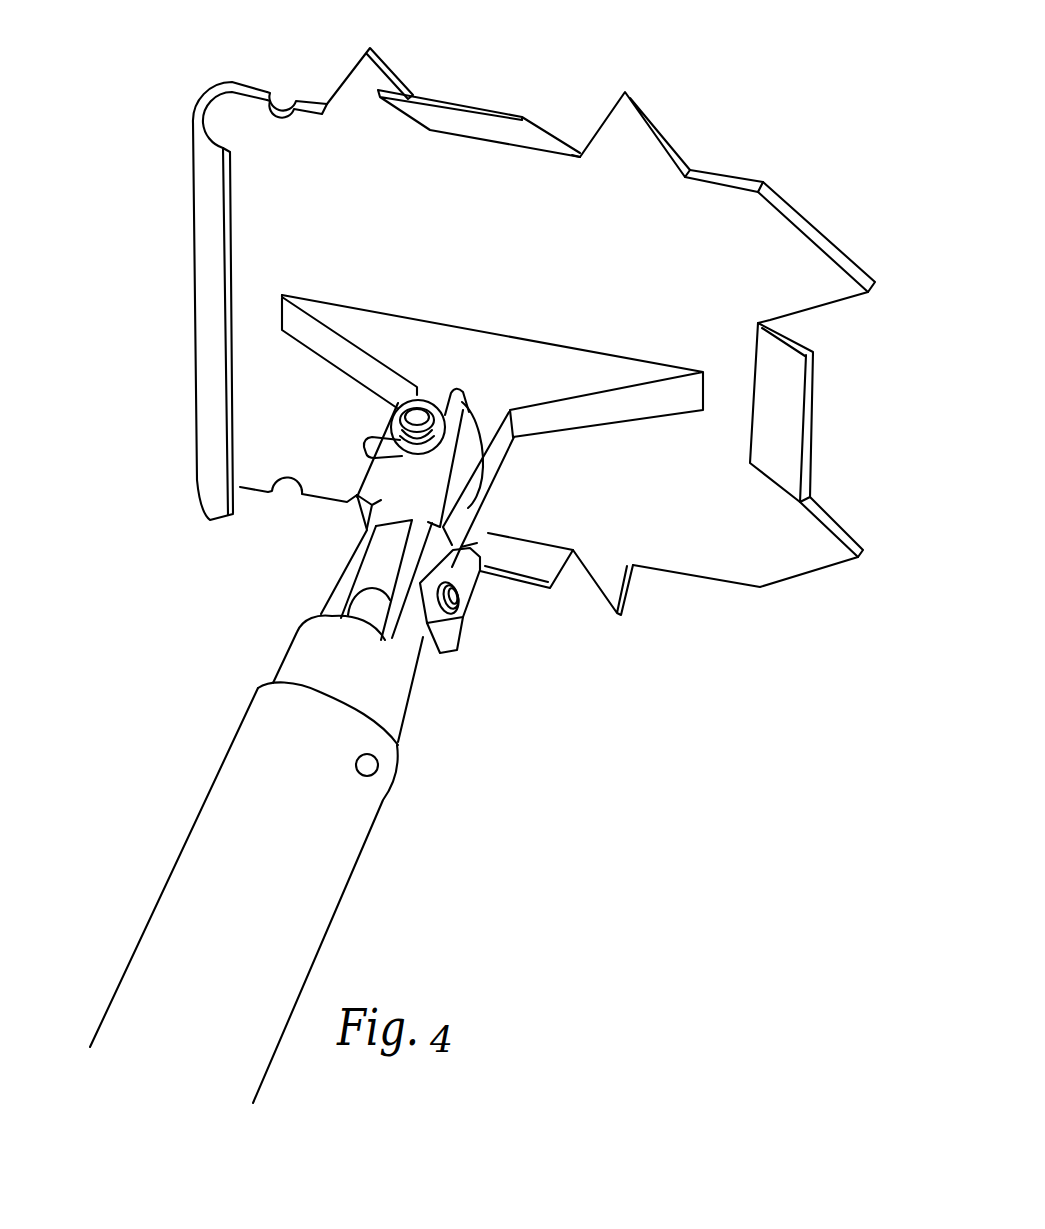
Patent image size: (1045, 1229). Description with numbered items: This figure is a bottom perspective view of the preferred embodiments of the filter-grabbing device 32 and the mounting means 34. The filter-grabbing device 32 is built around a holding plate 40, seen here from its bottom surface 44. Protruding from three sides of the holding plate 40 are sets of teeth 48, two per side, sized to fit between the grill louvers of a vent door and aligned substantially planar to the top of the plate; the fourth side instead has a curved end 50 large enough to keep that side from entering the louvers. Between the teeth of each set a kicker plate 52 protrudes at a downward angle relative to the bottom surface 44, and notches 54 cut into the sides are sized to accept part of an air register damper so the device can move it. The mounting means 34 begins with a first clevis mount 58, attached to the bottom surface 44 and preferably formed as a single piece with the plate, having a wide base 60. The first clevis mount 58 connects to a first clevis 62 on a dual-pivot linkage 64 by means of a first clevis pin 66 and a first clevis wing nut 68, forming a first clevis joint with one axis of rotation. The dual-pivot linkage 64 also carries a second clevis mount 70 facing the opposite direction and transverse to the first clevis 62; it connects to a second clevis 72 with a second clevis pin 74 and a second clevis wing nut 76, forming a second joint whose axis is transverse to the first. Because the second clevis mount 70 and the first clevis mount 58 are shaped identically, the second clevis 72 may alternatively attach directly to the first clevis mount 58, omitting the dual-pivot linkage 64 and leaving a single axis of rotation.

The filter-grabbing device 32 is at (178, 482).
The mounting means 34 is at (494, 602).
The holding plate 40 is at (730, 178).
The bottom surface 44 is at (531, 262).
The plurality of teeth 48 is at (382, 58).
The curved end 50 is at (205, 318).
The kicker plates 52 is at (462, 110).
The notches 54 is at (281, 98).
The first clevis mount 58 is at (497, 433).
The base 60 is at (490, 345).
The first clevis 62 is at (426, 494).
The dual-pivot linkage 64 is at (360, 518).
The first clevis pin 66 is at (410, 410).
The first clevis wing nut 68 is at (366, 441).
The second clevis mount 70 is at (391, 567).
The second clevis 72 is at (360, 682).
The second clevis pin 74 is at (458, 600).
The second clevis wing nut 76 is at (441, 655).